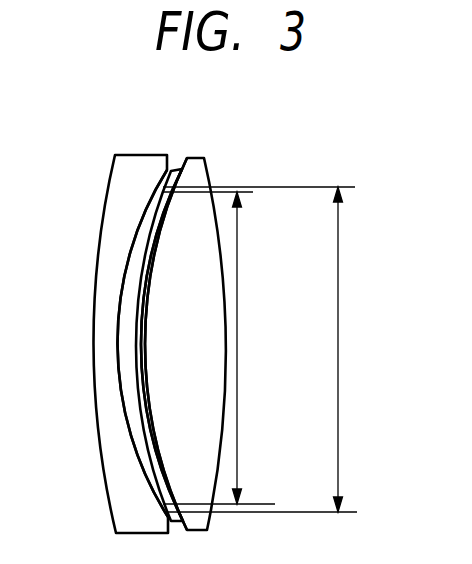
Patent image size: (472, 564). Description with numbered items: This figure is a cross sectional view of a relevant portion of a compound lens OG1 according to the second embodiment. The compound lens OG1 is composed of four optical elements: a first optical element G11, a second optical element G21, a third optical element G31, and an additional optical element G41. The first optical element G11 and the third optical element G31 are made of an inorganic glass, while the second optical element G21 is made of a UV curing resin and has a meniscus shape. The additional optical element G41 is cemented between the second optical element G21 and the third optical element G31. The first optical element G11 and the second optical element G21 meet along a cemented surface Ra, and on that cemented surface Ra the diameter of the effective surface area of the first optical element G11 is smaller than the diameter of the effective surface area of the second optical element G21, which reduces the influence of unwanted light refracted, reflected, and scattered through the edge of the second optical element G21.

The first optical element G11 is at (113, 210).
The second optical element G21 is at (152, 212).
The third optical element G31 is at (204, 168).
The additional optical element G41 is at (177, 172).
The compound lens OG1 is at (298, 168).
The cemented surface Ra is at (117, 367).